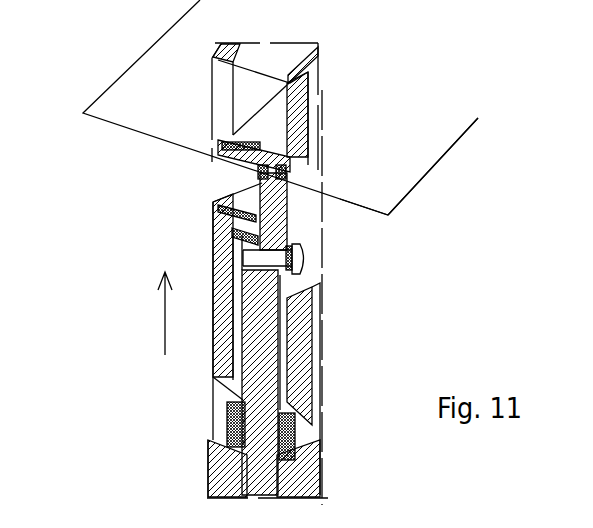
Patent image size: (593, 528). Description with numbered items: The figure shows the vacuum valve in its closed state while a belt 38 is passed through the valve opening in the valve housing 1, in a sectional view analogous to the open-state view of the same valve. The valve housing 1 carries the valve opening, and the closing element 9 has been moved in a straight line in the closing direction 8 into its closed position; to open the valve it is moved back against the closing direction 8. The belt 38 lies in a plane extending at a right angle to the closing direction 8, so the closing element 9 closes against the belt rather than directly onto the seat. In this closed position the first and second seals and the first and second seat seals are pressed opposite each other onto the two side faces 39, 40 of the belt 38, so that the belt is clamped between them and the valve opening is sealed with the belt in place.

The valve housing 1 is at (340, 92).
The closing direction 8 is at (165, 308).
The closing element 9 is at (304, 250).
The belt 38 is at (425, 172).
The side face of the belt 39 is at (355, 214).
The side face of the belt 40 is at (401, 175).